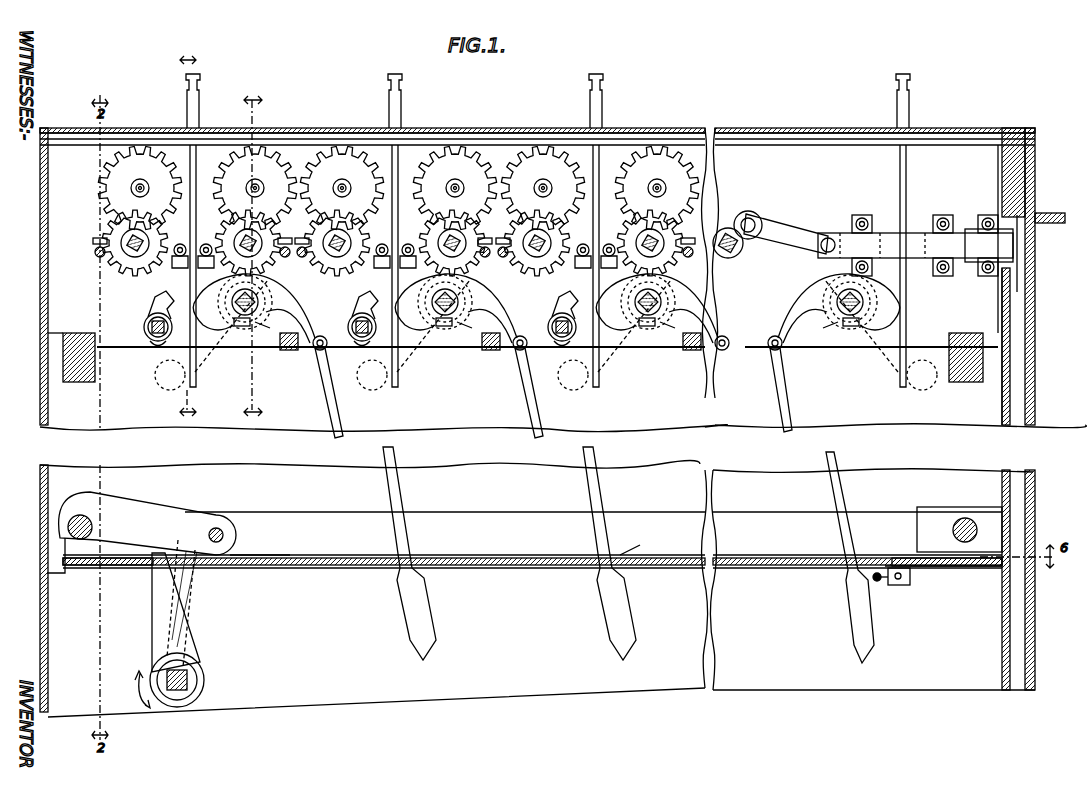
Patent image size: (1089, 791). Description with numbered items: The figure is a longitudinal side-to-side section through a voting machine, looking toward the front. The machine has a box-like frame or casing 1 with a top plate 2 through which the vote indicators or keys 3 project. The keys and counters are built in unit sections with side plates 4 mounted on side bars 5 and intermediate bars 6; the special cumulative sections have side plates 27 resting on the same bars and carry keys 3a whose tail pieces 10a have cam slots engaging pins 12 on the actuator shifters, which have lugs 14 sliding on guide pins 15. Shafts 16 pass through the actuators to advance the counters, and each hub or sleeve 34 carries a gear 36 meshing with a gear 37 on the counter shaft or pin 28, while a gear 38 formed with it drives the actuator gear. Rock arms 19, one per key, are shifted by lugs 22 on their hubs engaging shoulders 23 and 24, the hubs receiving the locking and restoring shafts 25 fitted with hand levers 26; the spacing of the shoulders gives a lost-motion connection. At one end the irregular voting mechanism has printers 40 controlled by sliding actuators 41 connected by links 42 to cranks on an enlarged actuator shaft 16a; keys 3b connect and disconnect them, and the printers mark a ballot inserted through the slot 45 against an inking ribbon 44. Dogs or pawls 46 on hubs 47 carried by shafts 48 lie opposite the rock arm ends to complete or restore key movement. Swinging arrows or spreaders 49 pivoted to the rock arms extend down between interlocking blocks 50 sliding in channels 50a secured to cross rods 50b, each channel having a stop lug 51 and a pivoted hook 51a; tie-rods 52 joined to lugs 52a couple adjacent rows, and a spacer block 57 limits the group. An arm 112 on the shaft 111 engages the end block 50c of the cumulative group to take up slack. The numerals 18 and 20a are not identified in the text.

The frame or casing 1 is at (918, 682).
The top plate 2 is at (478, 134).
The vote indicators or keys 3 is at (188, 235).
The ballot indicators or keys 3a is at (199, 95).
The keys or indicators 3b is at (910, 104).
The side plates 4 is at (253, 255).
The side bars 5 is at (80, 382).
The intermediate bars 6 is at (290, 351).
The tail pieces 10a is at (186, 374).
The pins 12 is at (186, 266).
The lugs 14 is at (182, 244).
The guide pins 15 is at (140, 270).
The shafts 16 is at (120, 244).
The enlarged actuator shaft 16a is at (735, 256).
The frame rail 18 is at (425, 140).
The rock arms 19 is at (262, 286).
The cam hub 20a is at (258, 300).
The lugs 22 is at (250, 326).
The shoulders or lugs 23 is at (232, 314).
The shoulders or lugs 24 is at (546, 325).
The locking and restoring shafts 25 is at (272, 311).
The party indicators or hand levers 26 is at (546, 326).
The side plates 27 is at (462, 352).
The shaft or pin 28 is at (125, 186).
The hub or sleeve 34 is at (128, 250).
The gear 36 is at (156, 238).
The gear 37 is at (250, 178).
The gear 38 is at (232, 182).
The printers 40 is at (975, 263).
The sliding actuators 41 is at (917, 233).
The links 42 is at (786, 230).
The inking ribbon 44 is at (1020, 280).
The slot 45 is at (1012, 128).
The dogs or pawls 46 is at (147, 300).
The hubs 47 is at (144, 327).
The shafts 48 is at (150, 344).
The swinging arrows or spreaders 49 is at (785, 433).
The interlocking slides or blocks 50 is at (545, 566).
The supporting guides or channels 50a is at (633, 541).
The cross rods 50b is at (88, 516).
The end block 50c is at (288, 554).
The stop lug 51 is at (990, 572).
The pivoted hook 51a is at (145, 507).
The tie-rods 52 is at (878, 584).
The lug 52a is at (905, 587).
The spacer block 57 is at (100, 570).
The shaft 111 is at (188, 672).
The arm 112 is at (158, 620).